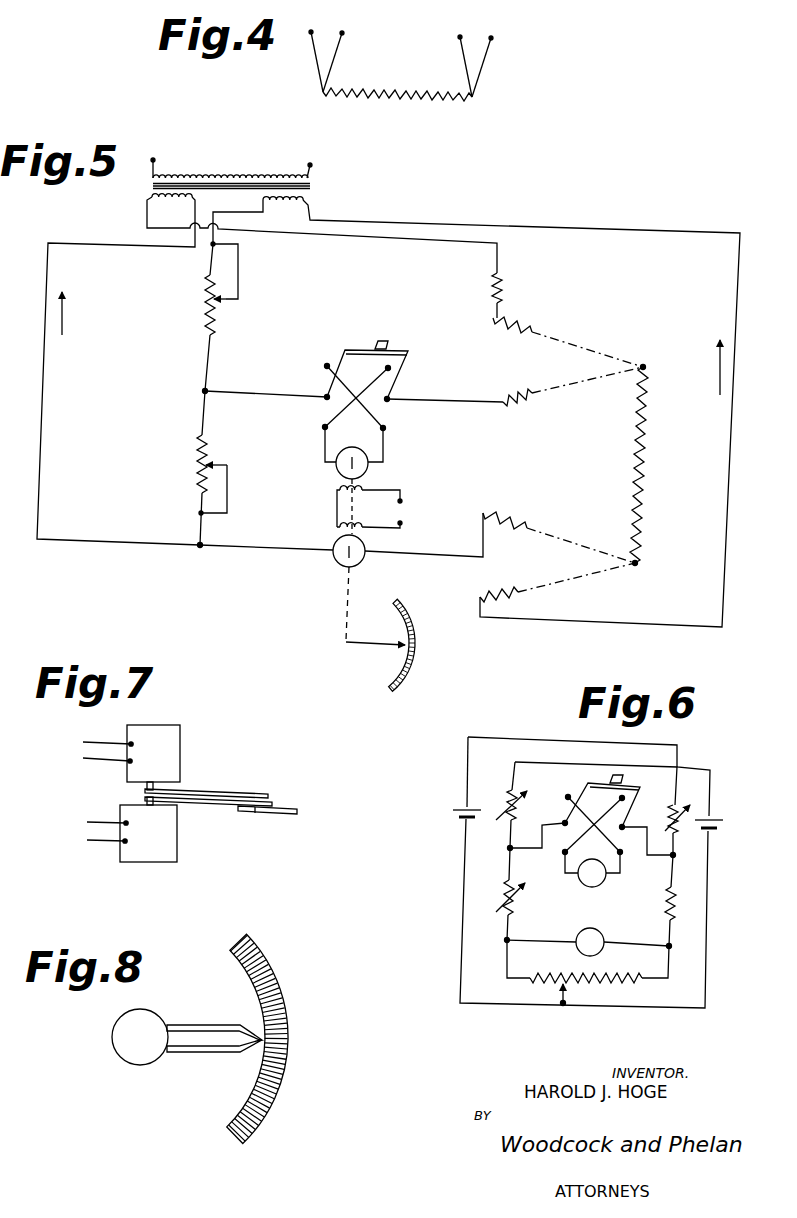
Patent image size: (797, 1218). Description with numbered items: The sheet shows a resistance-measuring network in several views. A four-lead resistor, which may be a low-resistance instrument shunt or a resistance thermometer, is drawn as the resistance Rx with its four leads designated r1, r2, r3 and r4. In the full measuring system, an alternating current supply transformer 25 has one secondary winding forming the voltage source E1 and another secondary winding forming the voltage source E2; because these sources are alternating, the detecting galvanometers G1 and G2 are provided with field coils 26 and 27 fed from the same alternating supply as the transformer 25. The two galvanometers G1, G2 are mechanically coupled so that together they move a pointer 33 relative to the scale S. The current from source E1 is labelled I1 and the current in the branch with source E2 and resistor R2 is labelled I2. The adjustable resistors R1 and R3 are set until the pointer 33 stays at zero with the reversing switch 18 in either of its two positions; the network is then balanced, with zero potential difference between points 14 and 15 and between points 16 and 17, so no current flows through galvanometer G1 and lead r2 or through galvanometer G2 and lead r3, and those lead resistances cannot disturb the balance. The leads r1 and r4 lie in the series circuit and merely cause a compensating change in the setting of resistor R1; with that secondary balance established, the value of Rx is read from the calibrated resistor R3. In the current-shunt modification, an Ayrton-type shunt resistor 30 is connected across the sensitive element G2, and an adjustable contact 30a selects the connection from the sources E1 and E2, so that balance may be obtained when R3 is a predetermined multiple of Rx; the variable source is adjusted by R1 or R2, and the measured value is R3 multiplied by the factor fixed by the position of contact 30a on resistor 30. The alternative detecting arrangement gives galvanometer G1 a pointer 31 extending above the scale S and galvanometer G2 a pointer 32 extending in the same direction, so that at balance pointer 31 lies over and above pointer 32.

In FIG. 4, the lead resistance r1 is at (484, 65).
In FIG. 5, the lead resistance r1 is at (520, 323).
In FIG. 4, the lead resistance r2 is at (462, 54).
In FIG. 5, the lead resistance r2 is at (515, 395).
In FIG. 4, the lead resistance r3 is at (335, 61).
In FIG. 5, the lead resistance r3 is at (497, 514).
In FIG. 4, the lead resistance r4 is at (316, 53).
In FIG. 5, the lead resistance r4 is at (492, 594).
In FIG. 4, the four-terminal resistor Rx is at (412, 97).
In FIG. 5, the four-terminal resistor Rx is at (640, 506).
In FIG. 6, the four-terminal resistor Rx is at (684, 910).
In FIG. 5, the adjustable resistor R1 is at (204, 303).
In FIG. 6, the adjustable resistor R1 is at (509, 803).
In FIG. 5, the adjustable resistor R2 is at (500, 283).
In FIG. 6, the adjustable resistor R2 is at (684, 831).
In FIG. 5, the calibrated reference resistor R3 is at (199, 466).
In FIG. 6, the calibrated reference resistor R3 is at (507, 892).
In FIG. 5, the voltage source E1 is at (295, 204).
In FIG. 6, the voltage source E1 is at (722, 823).
In FIG. 5, the voltage source E2 is at (148, 197).
In FIG. 6, the voltage source E2 is at (455, 811).
In FIG. 5, the current I1 is at (707, 367).
In FIG. 5, the current I2 is at (74, 313).
In FIG. 5, the circuit point 14 is at (203, 391).
In FIG. 6, the circuit point 14 is at (508, 848).
In FIG. 5, the circuit point 15 is at (643, 366).
In FIG. 6, the circuit point 15 is at (675, 857).
In FIG. 5, the circuit point 16 is at (200, 547).
In FIG. 6, the circuit point 16 is at (505, 940).
In FIG. 5, the circuit point 17 is at (637, 565).
In FIG. 6, the circuit point 17 is at (671, 948).
In FIG. 5, the reversing switch 18 is at (344, 353).
In FIG. 6, the reversing switch 18 is at (585, 790).
In FIG. 5, the alternating current supply transformer 25 is at (312, 189).
In FIG. 5, the field coil 26 is at (340, 488).
In FIG. 5, the field coil 27 is at (337, 526).
In FIG. 6, the shunt resistor 30 is at (548, 978).
In FIG. 6, the adjustable contact 30a is at (566, 997).
In FIG. 7, the pointer 31 is at (216, 790).
In FIG. 8, the pointer 31 is at (183, 1030).
In FIG. 7, the pointer 32 is at (222, 803).
In FIG. 8, the pointer 32 is at (200, 1050).
In FIG. 5, the pointer 33 is at (390, 648).
In FIG. 5, the galvanometer G1 is at (368, 466).
In FIG. 7, the galvanometer G1 is at (151, 725).
In FIG. 8, the galvanometer G1 is at (113, 1031).
In FIG. 6, the galvanometer G1 is at (604, 881).
In FIG. 5, the galvanometer G2 is at (333, 563).
In FIG. 7, the galvanometer G2 is at (151, 862).
In FIG. 6, the galvanometer G2 is at (580, 931).
In FIG. 5, the scale S is at (418, 646).
In FIG. 7, the scale S is at (272, 815).
In FIG. 8, the scale S is at (287, 1045).